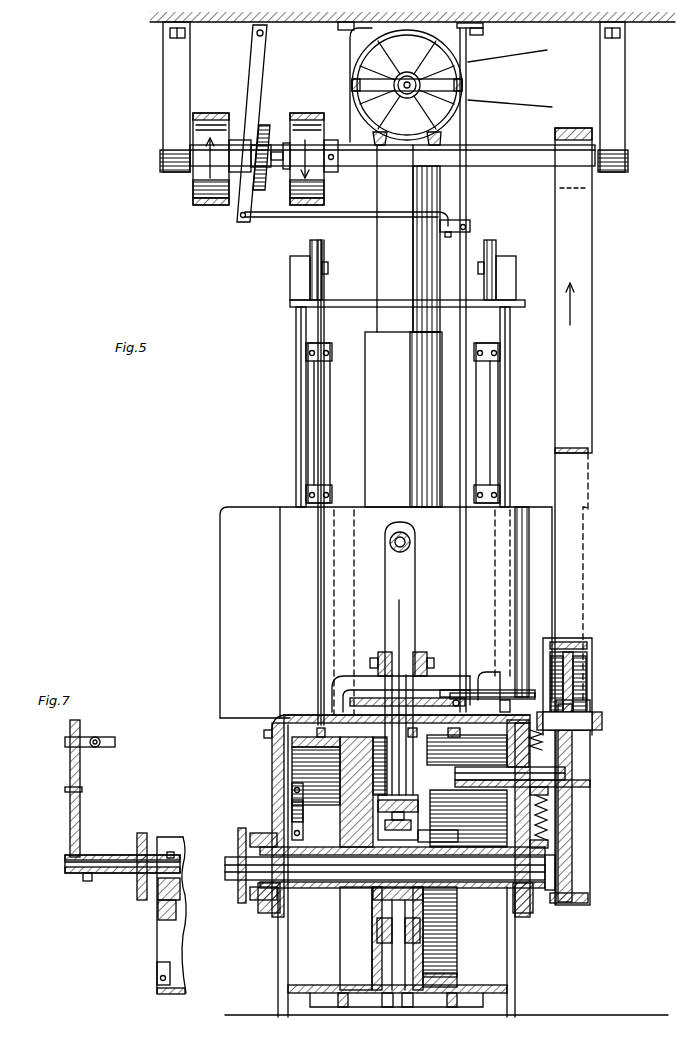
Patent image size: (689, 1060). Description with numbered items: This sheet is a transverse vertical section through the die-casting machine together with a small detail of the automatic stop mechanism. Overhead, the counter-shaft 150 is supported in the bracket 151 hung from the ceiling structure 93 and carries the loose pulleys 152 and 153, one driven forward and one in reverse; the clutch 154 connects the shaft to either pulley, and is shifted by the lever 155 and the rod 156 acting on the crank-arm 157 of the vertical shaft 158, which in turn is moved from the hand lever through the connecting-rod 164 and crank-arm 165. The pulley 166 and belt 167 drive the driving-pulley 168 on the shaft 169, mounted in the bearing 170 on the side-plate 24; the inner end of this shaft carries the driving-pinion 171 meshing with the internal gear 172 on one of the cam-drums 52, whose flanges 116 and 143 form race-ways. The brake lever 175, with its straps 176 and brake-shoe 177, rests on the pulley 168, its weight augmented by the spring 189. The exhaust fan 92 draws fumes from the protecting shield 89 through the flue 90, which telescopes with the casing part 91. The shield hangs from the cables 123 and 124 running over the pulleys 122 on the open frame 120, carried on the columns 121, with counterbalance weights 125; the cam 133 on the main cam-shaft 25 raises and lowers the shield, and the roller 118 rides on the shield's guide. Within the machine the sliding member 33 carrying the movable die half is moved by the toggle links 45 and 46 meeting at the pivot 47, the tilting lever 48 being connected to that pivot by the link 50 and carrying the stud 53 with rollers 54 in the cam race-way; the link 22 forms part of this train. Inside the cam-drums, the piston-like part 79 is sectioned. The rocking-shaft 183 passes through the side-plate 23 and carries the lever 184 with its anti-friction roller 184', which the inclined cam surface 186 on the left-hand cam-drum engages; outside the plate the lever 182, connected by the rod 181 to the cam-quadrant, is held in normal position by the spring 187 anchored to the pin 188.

In FIG. 5, the ceiling beam 93 is at (405, 21).
In FIG. 5, the bracket 151 is at (163, 98).
In FIG. 5, the counter-shaft 150 is at (502, 166).
In FIG. 5, the loose pulley 152 is at (210, 205).
In FIG. 5, the loose pulley 153 is at (324, 193).
In FIG. 5, the clutch 154 is at (262, 145).
In FIG. 5, the lever 155 is at (262, 60).
In FIG. 5, the rod 156 is at (268, 218).
In FIG. 5, the crank-arm 157 is at (460, 220).
In FIG. 5, the vertical shaft 158 is at (468, 240).
In FIG. 5, the exhaust fan 92 is at (428, 52).
In FIG. 5, the flue 90 is at (377, 250).
In FIG. 5, the co-acting part of the casing 91 is at (365, 432).
In FIG. 5, the rectangular open frame 120 is at (347, 300).
In FIG. 5, the pulley 122 is at (310, 244).
In FIG. 5, the rod or column 121 is at (296, 440).
In FIG. 5, the counterbalance weight 125 is at (330, 380).
In FIG. 5, the wire cable 123 is at (324, 578).
In FIG. 5, the wire cable 124 is at (322, 612).
In FIG. 5, the pulley 166 is at (578, 178).
In FIG. 5, the belt 167 is at (589, 410).
In FIG. 5, the protecting shield 89 is at (220, 588).
In FIG. 5, the link 22 is at (389, 545).
In FIG. 5, the link 45 is at (399, 652).
In FIG. 5, the link 46 is at (380, 652).
In FIG. 5, the bearing or pivot 47 is at (370, 663).
In FIG. 5, the link 50 is at (410, 650).
In FIG. 5, the sliding member 33 is at (435, 690).
In FIG. 5, the crank-arm 165 is at (497, 700).
In FIG. 5, the connecting-rod 164 is at (535, 697).
In FIG. 5, the metal strap 176 is at (594, 642).
In FIG. 5, the brake-shoe 177 is at (572, 642).
In FIG. 5, the driving-pulley 168 is at (587, 668).
In FIG. 5, the arm or brake lever 175 is at (603, 720).
In FIG. 5, the roller 118 is at (272, 729).
In FIG. 5, the side-plate 23 is at (268, 913).
In FIG. 7, the side-plate 23 is at (142, 833).
In FIG. 5, the side-plate 24 is at (528, 913).
In FIG. 5, the driving-pinion 171 is at (432, 752).
In FIG. 5, the stud 53 is at (374, 818).
In FIG. 5, the projecting inclined cam surface 186 is at (293, 808).
In FIG. 7, the projecting inclined cam surface 186 is at (157, 975).
In FIG. 5, the roller 54 is at (378, 832).
In FIG. 5, the bearing 170 is at (490, 792).
In FIG. 5, the tilting lever 48 is at (458, 838).
In FIG. 5, the shaft 169 is at (565, 773).
In FIG. 5, the spring 189 is at (548, 815).
In FIG. 5, the main cam-shaft 25 is at (530, 867).
In FIG. 5, the cam 133 is at (241, 829).
In FIG. 5, the piston 79 is at (380, 920).
In FIG. 5, the internal gear 172 is at (457, 932).
In FIG. 5, the cam-drum 52 is at (288, 988).
In FIG. 7, the cam-drum 52 is at (186, 990).
In FIG. 5, the flange 143 is at (344, 1008).
In FIG. 5, the flange 116 is at (406, 1008).
In FIG. 7, the lever 182 is at (80, 773).
In FIG. 7, the pin 188 is at (115, 745).
In FIG. 7, the spring 187 is at (99, 738).
In FIG. 7, the rod 181 is at (67, 792).
In FIG. 7, the rocking-shaft 183 is at (113, 868).
In FIG. 7, the lever 184 is at (186, 876).
In FIG. 7, the anti-friction roller 184' is at (189, 910).